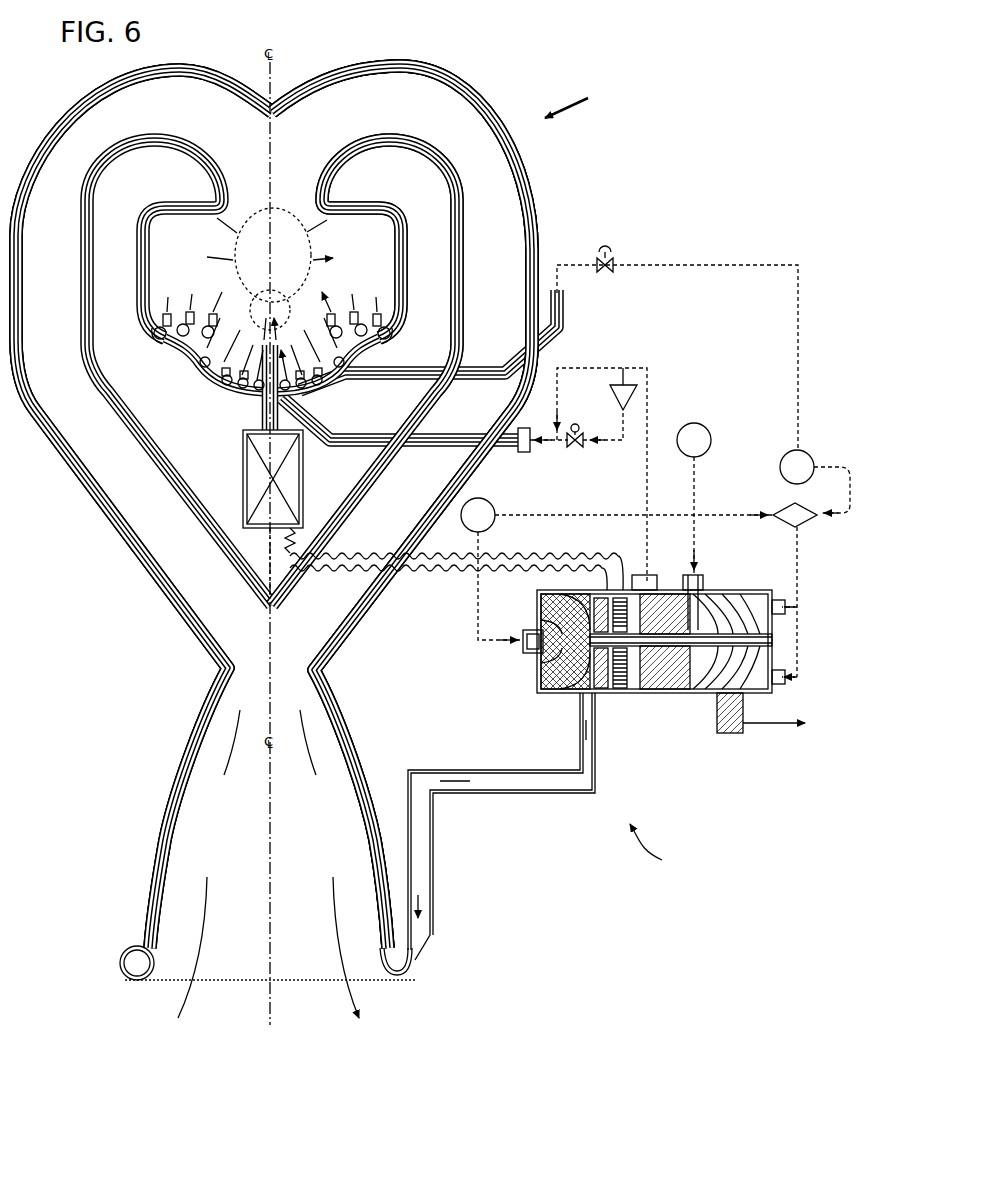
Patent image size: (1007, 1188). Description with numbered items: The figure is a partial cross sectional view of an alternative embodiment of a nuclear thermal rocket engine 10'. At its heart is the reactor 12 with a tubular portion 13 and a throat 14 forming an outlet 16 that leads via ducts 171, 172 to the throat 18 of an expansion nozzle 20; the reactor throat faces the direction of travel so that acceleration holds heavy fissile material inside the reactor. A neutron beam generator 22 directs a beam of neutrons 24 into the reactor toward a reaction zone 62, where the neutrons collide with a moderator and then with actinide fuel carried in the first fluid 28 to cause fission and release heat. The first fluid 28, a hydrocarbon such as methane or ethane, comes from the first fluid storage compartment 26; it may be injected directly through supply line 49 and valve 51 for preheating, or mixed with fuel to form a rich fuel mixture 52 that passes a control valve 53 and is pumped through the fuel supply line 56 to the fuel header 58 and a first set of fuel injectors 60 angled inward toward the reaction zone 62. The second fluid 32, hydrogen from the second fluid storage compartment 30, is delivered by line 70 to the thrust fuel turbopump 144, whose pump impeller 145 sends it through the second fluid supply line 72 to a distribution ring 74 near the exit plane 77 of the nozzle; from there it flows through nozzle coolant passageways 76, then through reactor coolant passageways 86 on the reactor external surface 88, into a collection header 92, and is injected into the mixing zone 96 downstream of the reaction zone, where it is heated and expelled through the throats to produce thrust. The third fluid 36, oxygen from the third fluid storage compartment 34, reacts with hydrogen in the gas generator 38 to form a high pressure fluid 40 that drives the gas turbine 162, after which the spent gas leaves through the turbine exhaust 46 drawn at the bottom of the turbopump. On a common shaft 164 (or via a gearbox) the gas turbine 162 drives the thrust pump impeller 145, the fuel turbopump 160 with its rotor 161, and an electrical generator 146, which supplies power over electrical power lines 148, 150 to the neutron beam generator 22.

The rocket engine 10' is at (618, 473).
The reactor 12 is at (393, 240).
The tubular portion 13 is at (420, 275).
The throat 14 is at (233, 182).
The outlet 16 is at (321, 155).
The duct 171 is at (94, 149).
The duct 172 is at (414, 129).
The throat of expansion nozzle 18 is at (242, 667).
The expansion nozzle 20 is at (165, 873).
The neutron beam generator 22 is at (243, 452).
The beam of neutrons 24 is at (272, 262).
The first fluid storage compartment 26 is at (690, 424).
The first fluid 28 is at (617, 367).
The second fluid storage compartment 30 is at (490, 500).
The second fluid 32 is at (497, 520).
The third fluid storage compartment 34 is at (810, 452).
The third fluid 36 is at (783, 478).
The gas generator 38 is at (810, 508).
The high pressure fluid 40 is at (800, 578).
The turbine exhaust 46 is at (770, 724).
The supply line 49 is at (697, 264).
The valve 51 is at (611, 256).
The rich fuel mixture 52 is at (610, 445).
The control valve 53 is at (582, 428).
The fuel supply line 56 is at (365, 445).
The fuel header 58 is at (240, 396).
The first set of fuel injectors 60 is at (250, 392).
The reaction zone 62 is at (253, 297).
The line 70 is at (505, 645).
The second fluid supply line 72 is at (478, 768).
The distribution ring 74 is at (119, 950).
The nozzle coolant passageways 76 is at (353, 754).
The exit plane 77 is at (367, 981).
The reactor coolant passageways 86 is at (138, 292).
The reactor external surface 88 is at (142, 318).
The collection header 92 is at (222, 386).
The mixing zone 96 is at (237, 268).
The thrust fuel turbopump 144 is at (737, 593).
The pump impeller 145 is at (537, 600).
The electrical generator 146 is at (630, 698).
The electrical power line 148 is at (425, 553).
The electrical power line 150 is at (417, 568).
The fuel turbopump 160 is at (663, 585).
The fuel turbopump rotor 161 is at (647, 690).
The gas turbine 162 is at (745, 686).
The common shaft 164 is at (776, 640).